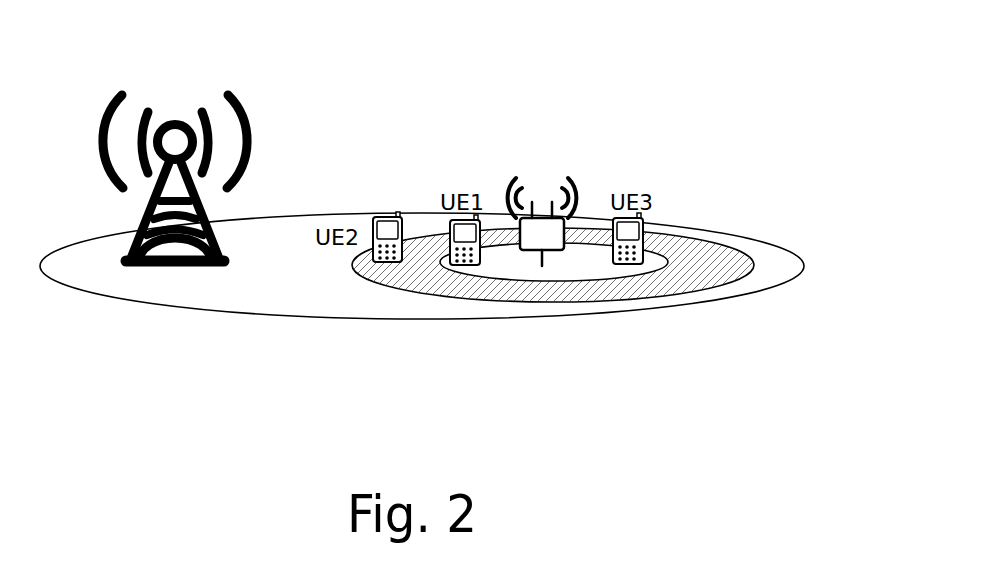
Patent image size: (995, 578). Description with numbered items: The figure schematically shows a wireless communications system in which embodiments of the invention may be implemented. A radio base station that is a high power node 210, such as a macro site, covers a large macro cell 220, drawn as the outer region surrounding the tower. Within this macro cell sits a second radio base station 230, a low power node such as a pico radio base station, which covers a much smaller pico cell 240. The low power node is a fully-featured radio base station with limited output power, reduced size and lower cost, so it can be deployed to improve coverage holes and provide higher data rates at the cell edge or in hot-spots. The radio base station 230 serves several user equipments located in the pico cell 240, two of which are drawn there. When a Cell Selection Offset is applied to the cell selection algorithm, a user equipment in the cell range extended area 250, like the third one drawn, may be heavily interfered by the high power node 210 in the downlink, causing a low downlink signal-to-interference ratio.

The high power node 210 is at (163, 110).
The macro cell 220 is at (222, 278).
The radio base station 230 is at (535, 182).
The pico cell 240 is at (563, 263).
The cell range extended area 250 is at (407, 278).